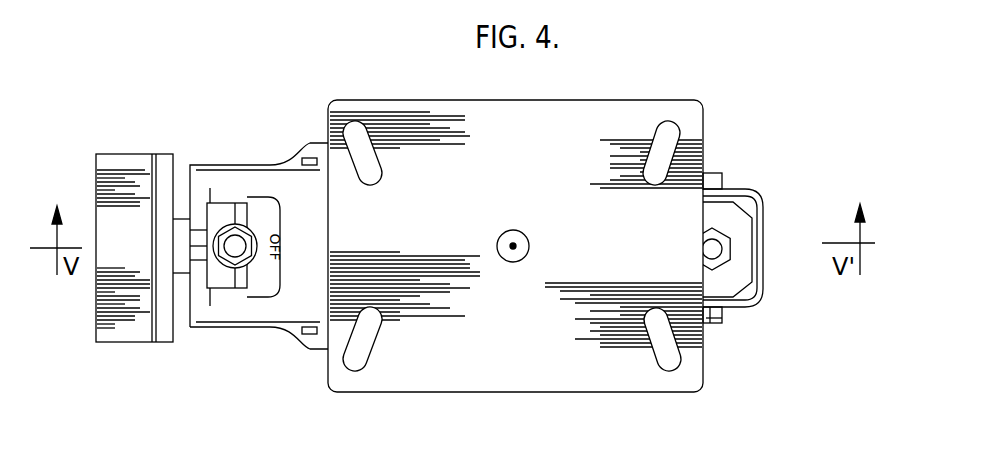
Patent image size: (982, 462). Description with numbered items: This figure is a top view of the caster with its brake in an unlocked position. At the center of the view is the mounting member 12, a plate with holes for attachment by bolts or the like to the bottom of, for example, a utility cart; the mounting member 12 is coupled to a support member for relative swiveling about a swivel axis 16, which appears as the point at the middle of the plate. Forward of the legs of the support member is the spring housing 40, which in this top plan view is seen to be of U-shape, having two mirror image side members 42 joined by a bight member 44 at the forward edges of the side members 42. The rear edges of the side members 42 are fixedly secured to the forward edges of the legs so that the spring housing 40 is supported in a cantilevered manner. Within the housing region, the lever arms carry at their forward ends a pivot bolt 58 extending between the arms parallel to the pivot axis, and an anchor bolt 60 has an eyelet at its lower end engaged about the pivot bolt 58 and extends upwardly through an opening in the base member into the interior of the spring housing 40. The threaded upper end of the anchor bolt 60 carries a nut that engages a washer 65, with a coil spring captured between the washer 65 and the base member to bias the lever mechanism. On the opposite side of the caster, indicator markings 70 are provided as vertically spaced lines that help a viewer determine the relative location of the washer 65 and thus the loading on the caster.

The mounting member 12 is at (553, 171).
The swivel axis 16 is at (510, 263).
The spring housing 40 is at (758, 259).
The side members 42 is at (742, 188).
The bight member 44 is at (764, 248).
The pivot bolt 58 is at (712, 325).
The anchor bolt 60 is at (710, 257).
The washer 65 is at (733, 220).
The indicator markings 70 is at (103, 360).